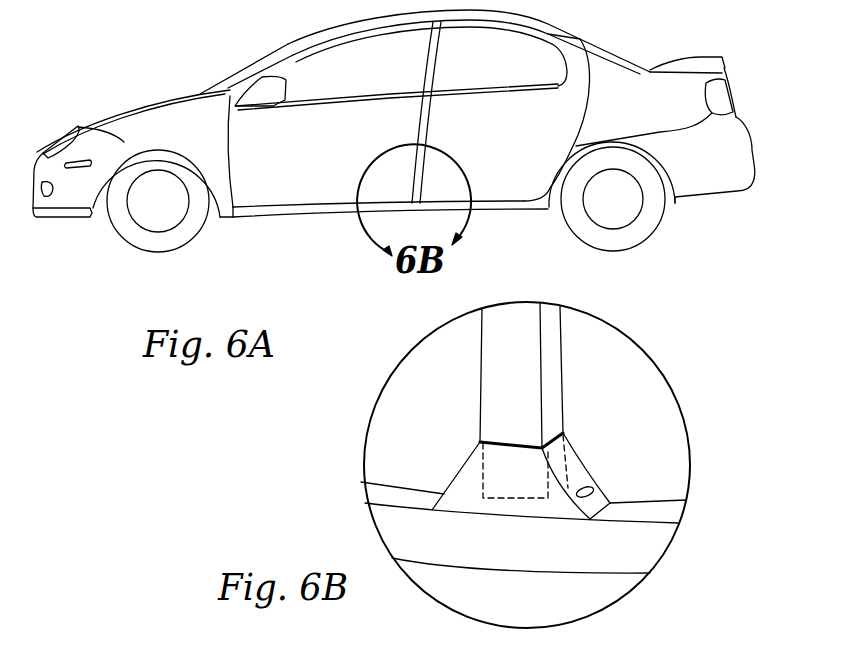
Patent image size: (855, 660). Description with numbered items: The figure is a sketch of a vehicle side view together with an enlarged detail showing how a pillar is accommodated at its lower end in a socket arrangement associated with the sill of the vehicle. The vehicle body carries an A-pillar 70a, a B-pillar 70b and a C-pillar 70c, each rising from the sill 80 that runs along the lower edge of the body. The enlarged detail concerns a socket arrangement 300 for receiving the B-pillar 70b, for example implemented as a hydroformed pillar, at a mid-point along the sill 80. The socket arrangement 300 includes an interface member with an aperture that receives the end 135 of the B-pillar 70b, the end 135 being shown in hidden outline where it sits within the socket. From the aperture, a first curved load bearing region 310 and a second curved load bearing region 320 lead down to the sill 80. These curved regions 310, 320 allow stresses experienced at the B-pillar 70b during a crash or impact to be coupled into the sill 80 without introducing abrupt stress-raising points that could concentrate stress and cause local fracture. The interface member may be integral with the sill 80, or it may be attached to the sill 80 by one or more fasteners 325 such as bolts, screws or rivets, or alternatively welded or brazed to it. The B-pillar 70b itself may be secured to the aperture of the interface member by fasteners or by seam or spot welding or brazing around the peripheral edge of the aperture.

In FIG. 6A, the A-pillar 70a is at (286, 54).
In FIG. 6A, the B-pillar 70b is at (418, 129).
In FIG. 6B, the B-pillar 70b is at (549, 382).
In FIG. 6A, the C-pillar 70c is at (573, 40).
In FIG. 6A, the sill 80 is at (250, 214).
In FIG. 6B, the sill 80 is at (513, 555).
In FIG. 6B, the socket arrangement 300 is at (684, 389).
In FIG. 6B, the first curved load bearing region 310 is at (477, 446).
In FIG. 6B, the second curved load bearing region 320 is at (578, 470).
In FIG. 6B, the fasteners 325 is at (590, 492).
In FIG. 6B, the end of the pillar 135 is at (497, 471).